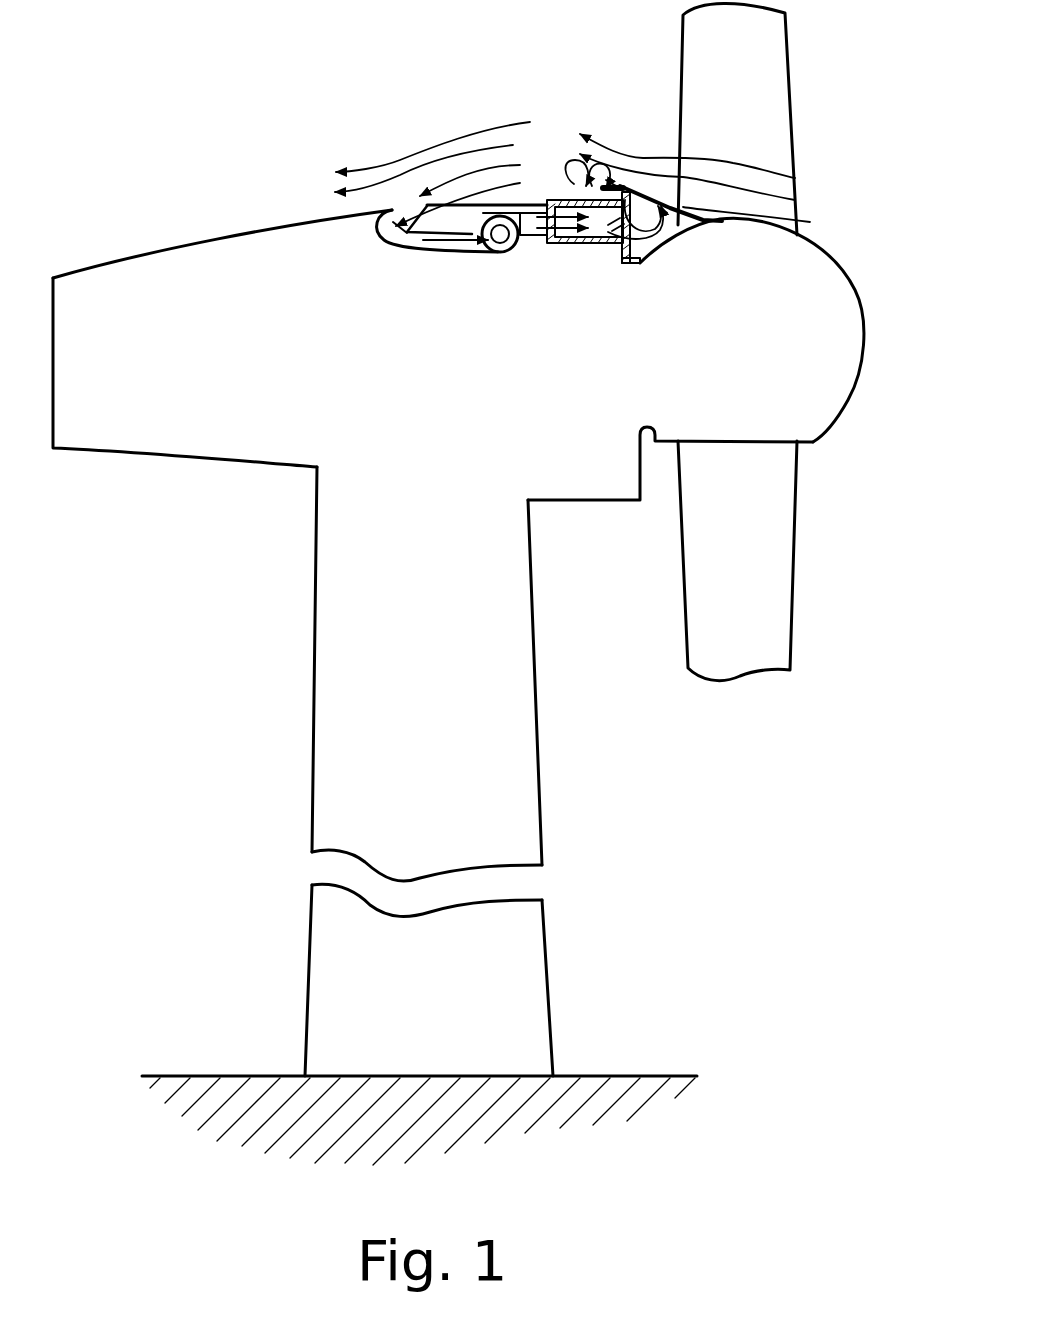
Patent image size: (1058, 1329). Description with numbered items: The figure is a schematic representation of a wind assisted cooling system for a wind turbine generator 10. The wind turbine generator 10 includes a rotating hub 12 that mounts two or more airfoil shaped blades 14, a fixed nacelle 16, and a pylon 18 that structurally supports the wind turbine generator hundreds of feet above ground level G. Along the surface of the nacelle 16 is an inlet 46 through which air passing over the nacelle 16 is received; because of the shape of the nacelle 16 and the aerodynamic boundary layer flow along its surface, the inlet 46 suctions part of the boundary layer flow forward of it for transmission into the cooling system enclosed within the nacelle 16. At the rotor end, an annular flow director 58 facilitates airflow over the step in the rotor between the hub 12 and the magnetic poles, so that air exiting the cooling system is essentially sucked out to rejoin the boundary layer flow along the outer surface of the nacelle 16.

The wind turbine generator 10 is at (160, 190).
The rotating hub 12 is at (832, 375).
The airfoil shaped blades 14 is at (785, 580).
The nacelle 16 is at (247, 423).
The pylon 18 is at (535, 678).
The inlet 46 is at (390, 209).
The annular flow director 58 is at (670, 220).
The ground level G is at (613, 1076).